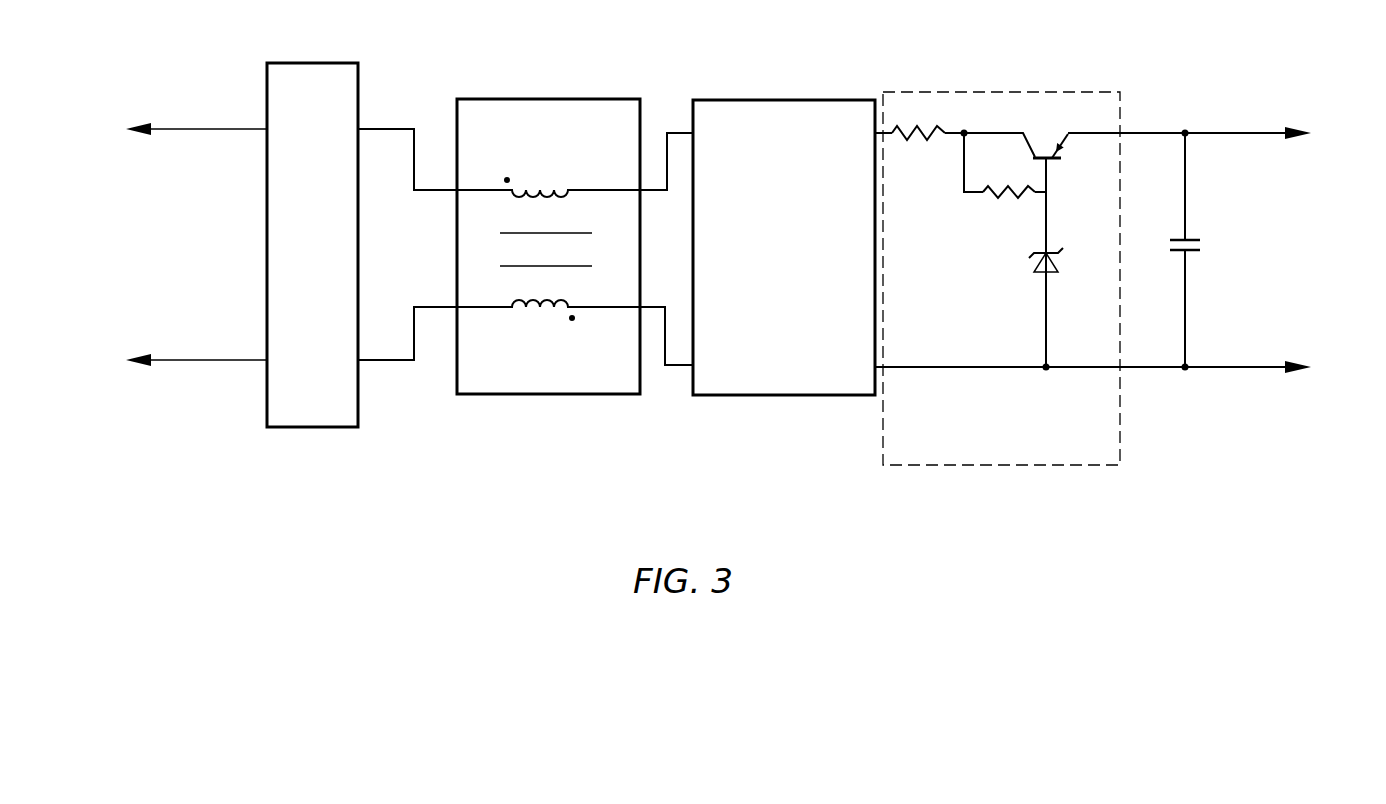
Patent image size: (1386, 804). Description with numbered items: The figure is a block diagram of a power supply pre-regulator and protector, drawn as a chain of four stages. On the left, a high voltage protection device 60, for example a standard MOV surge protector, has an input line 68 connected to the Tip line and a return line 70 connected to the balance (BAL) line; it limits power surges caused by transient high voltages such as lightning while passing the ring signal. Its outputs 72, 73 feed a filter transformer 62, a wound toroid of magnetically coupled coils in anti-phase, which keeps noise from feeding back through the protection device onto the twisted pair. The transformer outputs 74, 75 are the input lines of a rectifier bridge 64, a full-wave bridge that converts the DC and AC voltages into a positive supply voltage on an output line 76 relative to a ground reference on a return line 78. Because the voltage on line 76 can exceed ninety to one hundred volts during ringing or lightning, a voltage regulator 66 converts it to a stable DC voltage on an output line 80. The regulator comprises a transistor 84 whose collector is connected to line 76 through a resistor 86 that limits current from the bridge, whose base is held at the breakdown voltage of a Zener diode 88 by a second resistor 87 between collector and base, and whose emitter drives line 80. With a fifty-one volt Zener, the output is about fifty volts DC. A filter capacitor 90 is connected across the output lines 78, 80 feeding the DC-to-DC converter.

The high voltage protection device 60 is at (335, 63).
The filter transformer 62 is at (608, 99).
The rectifier bridge 64 is at (754, 99).
The voltage regulator 66 is at (1080, 92).
The input line 68 is at (198, 127).
The return line 70 is at (195, 360).
The output 72 is at (387, 128).
The output 73 is at (360, 338).
The output 74 is at (681, 133).
The output 75 is at (677, 365).
The output line 76 is at (890, 133).
The return line 78 is at (942, 367).
The output line 80 is at (1213, 134).
The NPN transistor 84 is at (1035, 143).
The resistor 86 is at (915, 127).
The second resistor 87 is at (1007, 197).
The Zener diode 88 is at (1052, 250).
The filter capacitor 90 is at (1187, 237).